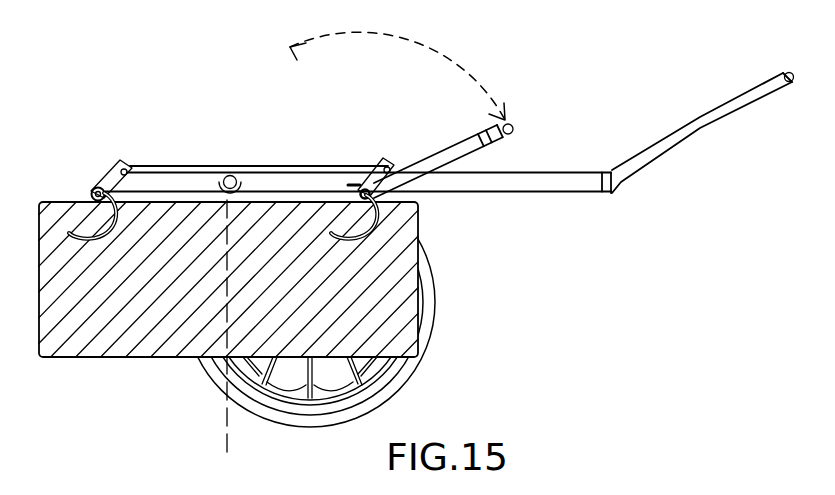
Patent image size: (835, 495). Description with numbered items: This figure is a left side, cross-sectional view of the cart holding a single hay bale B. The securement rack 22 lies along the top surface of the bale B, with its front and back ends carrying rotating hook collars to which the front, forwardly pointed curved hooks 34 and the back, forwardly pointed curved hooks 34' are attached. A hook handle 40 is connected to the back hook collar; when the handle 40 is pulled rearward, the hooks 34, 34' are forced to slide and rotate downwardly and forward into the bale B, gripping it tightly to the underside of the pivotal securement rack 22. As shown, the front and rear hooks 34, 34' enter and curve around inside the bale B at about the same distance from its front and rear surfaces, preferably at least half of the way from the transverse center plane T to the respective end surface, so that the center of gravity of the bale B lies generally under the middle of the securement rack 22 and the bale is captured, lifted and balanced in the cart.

The securement rack 22 is at (172, 138).
The front forwardly pointed curved hooks 34 is at (71, 193).
The back forwardly pointed curved hooks 34' is at (413, 217).
The hook handle 40 is at (510, 134).
The hay bale B is at (87, 330).
The transverse center plane T is at (229, 342).